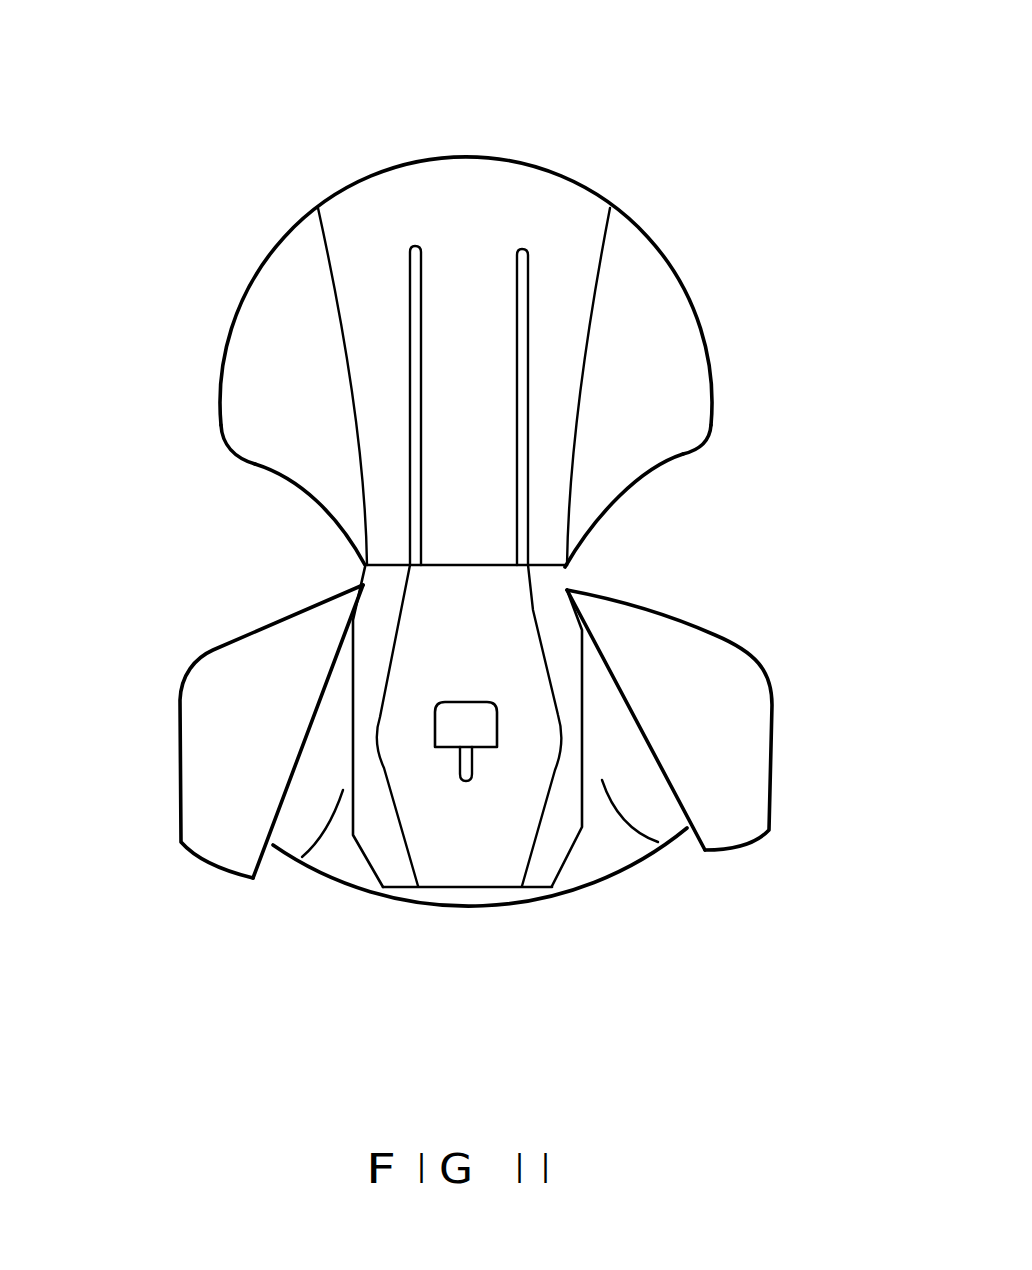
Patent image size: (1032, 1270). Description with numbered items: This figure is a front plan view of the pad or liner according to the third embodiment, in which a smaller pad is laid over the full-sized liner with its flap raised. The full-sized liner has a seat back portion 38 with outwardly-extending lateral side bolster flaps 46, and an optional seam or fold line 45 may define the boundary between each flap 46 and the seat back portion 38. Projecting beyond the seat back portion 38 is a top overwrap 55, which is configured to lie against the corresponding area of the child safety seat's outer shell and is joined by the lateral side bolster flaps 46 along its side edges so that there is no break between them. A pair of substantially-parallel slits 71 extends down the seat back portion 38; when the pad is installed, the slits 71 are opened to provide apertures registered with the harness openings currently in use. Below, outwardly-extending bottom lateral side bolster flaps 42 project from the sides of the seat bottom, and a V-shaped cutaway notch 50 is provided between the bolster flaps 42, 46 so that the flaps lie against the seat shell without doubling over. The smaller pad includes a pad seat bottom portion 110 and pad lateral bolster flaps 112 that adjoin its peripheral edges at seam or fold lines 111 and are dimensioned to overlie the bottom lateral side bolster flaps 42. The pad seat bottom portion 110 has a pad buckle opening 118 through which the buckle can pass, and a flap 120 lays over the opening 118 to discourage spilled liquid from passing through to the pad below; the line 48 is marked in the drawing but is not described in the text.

The seat back portion 38 is at (463, 228).
The bottom lateral side bolster flaps 42 is at (233, 785).
The seam or fold line 45 is at (340, 303).
The lateral side bolster flaps 46 is at (293, 330).
The wing inner edge 48 is at (323, 712).
The V-shaped cutaway notch 50 is at (265, 543).
The top overwrap 55 is at (577, 180).
The substantially-parallel slits 71 is at (412, 247).
The pad seat bottom portion 110 is at (523, 768).
The seam or fold lines 111 is at (403, 637).
The pad lateral bolster flaps 112 is at (375, 798).
The pad buckle opening 118 is at (465, 783).
The flap 120 is at (462, 723).